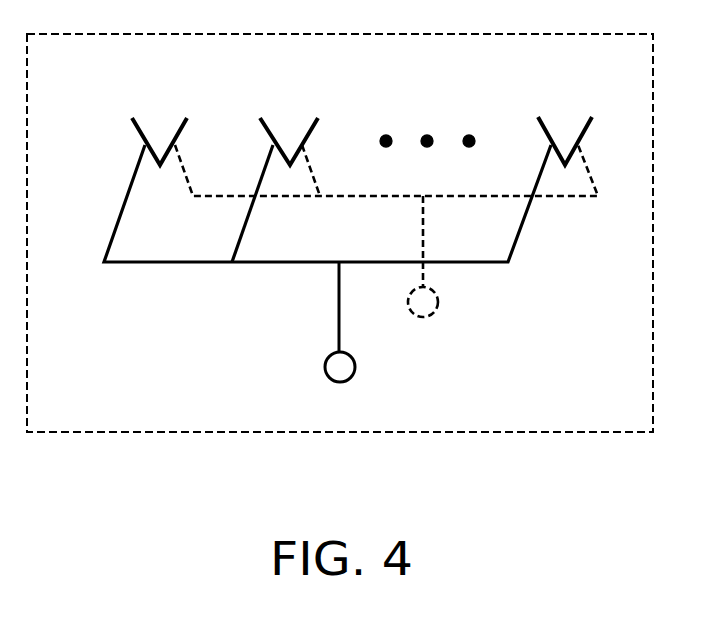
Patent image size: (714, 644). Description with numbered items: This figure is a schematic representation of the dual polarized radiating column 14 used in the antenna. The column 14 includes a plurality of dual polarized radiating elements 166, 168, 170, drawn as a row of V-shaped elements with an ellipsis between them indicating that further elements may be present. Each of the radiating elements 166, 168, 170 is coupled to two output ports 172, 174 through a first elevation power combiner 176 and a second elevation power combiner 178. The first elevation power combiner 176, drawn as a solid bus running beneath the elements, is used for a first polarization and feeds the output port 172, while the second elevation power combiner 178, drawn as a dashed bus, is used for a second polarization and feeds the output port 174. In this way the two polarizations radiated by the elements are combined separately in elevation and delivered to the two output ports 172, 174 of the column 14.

The dual polarized radiating column 14 is at (340, 33).
The dual polarized radiating element 166 is at (132, 118).
The dual polarized radiating element 168 is at (318, 118).
The dual polarized radiating element 170 is at (537, 118).
The output port 172 is at (350, 378).
The output port 174 is at (433, 315).
The first elevation power combiner 176 is at (488, 263).
The second elevation power combiner 178 is at (552, 198).